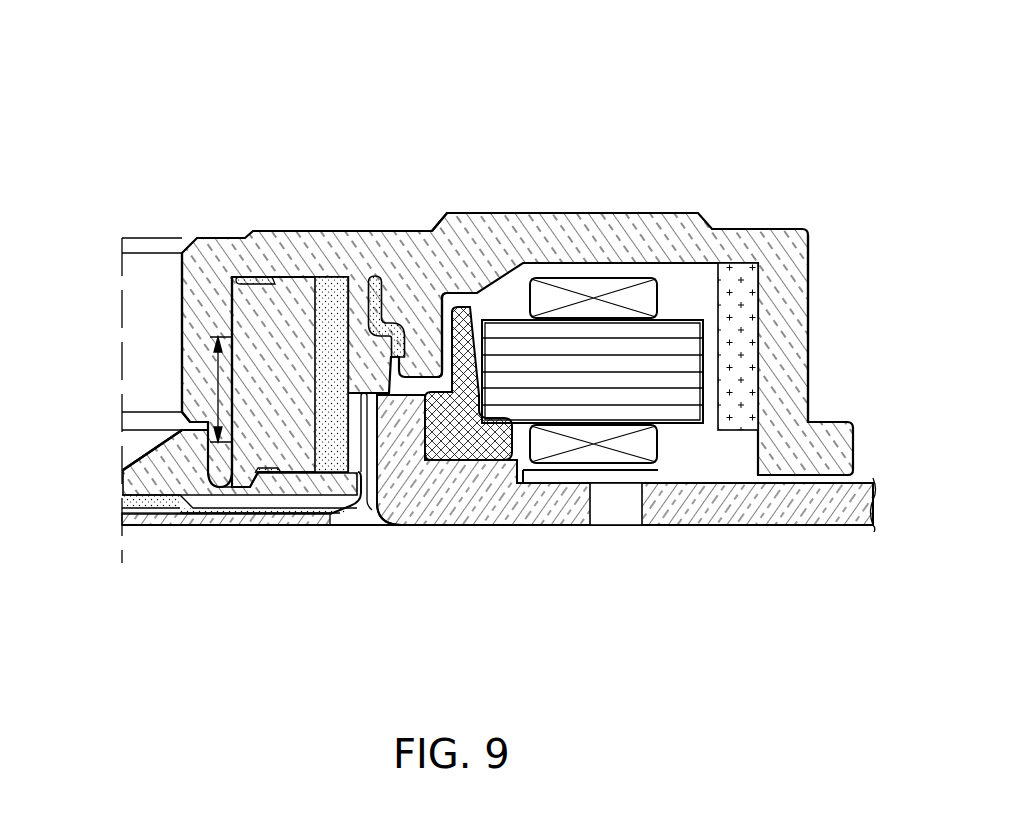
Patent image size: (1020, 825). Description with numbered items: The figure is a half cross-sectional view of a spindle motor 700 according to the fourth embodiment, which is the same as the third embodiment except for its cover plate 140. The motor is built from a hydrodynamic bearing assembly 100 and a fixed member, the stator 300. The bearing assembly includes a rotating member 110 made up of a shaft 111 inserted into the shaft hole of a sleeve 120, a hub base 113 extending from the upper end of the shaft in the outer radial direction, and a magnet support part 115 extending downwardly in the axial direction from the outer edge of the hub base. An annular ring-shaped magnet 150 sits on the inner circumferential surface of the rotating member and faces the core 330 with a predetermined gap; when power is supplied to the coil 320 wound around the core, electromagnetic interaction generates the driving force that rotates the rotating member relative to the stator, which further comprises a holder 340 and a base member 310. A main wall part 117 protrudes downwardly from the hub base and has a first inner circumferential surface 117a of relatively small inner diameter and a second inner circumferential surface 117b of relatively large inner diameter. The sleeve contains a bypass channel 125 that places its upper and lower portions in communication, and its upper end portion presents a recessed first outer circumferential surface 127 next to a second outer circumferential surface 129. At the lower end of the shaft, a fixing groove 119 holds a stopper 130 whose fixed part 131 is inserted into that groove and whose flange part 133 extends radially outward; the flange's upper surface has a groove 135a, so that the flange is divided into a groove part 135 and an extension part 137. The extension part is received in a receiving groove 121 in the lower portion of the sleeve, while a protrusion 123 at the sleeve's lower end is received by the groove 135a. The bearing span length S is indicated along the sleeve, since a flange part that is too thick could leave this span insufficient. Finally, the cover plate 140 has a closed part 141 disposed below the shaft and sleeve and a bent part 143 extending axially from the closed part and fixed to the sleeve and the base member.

The spindle motor 700 is at (180, 112).
The rotating member 110 is at (478, 80).
The shaft 111 is at (204, 285).
The hub base 113 is at (500, 238).
The magnet support part 115 is at (790, 320).
The main wall part 117 is at (653, 280).
The first inner circumferential surface 117a is at (407, 283).
The second inner circumferential surface 117b is at (420, 360).
The sleeve 120 is at (250, 333).
The bypass channel 125 is at (305, 277).
The first outer circumferential surface 127 is at (340, 280).
The second outer circumferential surface 129 is at (372, 276).
The fixing groove 119 is at (185, 407).
The bearing span length S is at (216, 388).
The groove 135a is at (220, 500).
The stopper 130 is at (198, 553).
The fixed part 131 is at (147, 525).
The flange part 133 is at (239, 567).
The groove part 135 is at (240, 500).
The extension part 137 is at (286, 518).
The cover plate 140 is at (269, 539).
The closed part 141 is at (335, 515).
The bent part 143 is at (390, 520).
The receiving groove 121 is at (320, 478).
The protrusion 123 is at (375, 450).
The holder 340 is at (470, 437).
The base member 310 is at (523, 510).
The coil 320 is at (590, 455).
The core 330 is at (633, 397).
The stator 300 is at (677, 598).
The annular ring-shaped magnet 150 is at (737, 400).
The hydrodynamic bearing assembly 100 is at (128, 652).